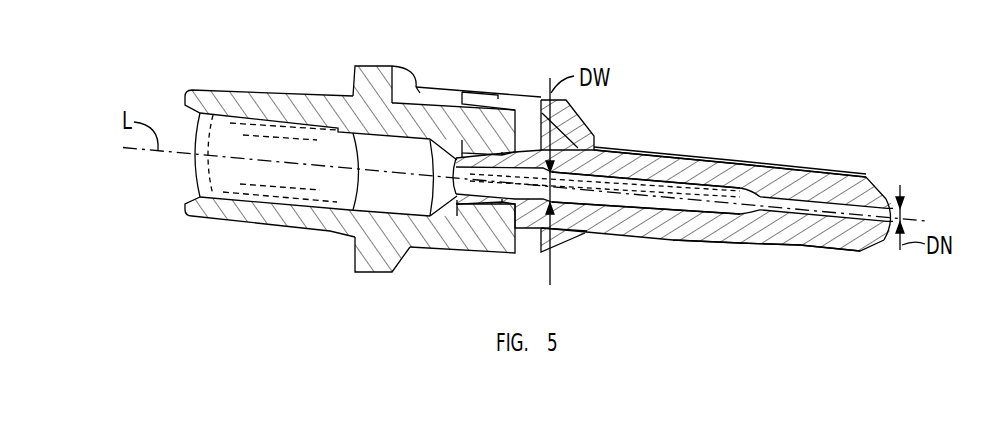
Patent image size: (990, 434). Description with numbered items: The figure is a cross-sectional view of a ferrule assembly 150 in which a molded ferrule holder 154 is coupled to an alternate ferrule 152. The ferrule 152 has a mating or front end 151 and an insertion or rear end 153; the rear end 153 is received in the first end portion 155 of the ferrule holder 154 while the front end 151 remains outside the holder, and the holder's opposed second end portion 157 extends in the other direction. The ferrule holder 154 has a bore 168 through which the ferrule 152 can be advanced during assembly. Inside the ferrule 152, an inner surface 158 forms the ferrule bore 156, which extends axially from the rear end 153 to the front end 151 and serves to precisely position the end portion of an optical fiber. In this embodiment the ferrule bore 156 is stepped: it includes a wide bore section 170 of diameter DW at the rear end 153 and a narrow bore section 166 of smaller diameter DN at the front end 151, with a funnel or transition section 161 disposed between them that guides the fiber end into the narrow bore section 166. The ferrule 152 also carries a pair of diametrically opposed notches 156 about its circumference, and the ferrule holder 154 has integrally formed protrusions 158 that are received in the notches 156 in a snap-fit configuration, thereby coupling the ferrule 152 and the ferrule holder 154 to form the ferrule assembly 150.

The ferrule assembly 150 is at (639, 133).
The mating end 151 is at (889, 262).
The ferrule 152 is at (790, 178).
The insertion end 153 is at (429, 227).
The ferrule holder 154 is at (370, 88).
The first end portion 155 is at (588, 238).
The ferrule bore 156 is at (455, 160).
The second end portion 157 is at (178, 231).
The inner surface 158 is at (480, 140).
The funnel section 161 is at (746, 189).
The narrow bore section 166 is at (813, 200).
The bore 168 is at (282, 180).
The wide bore section 170 is at (690, 183).